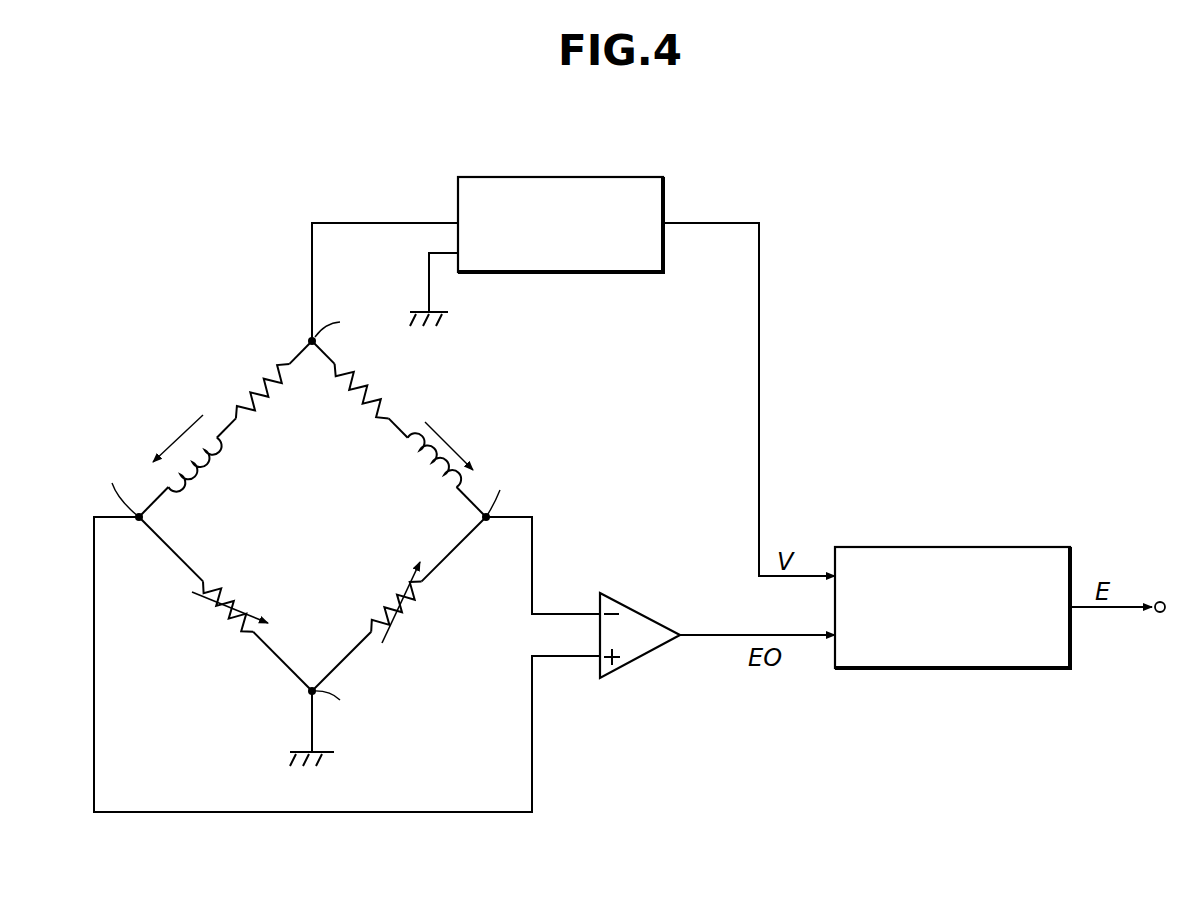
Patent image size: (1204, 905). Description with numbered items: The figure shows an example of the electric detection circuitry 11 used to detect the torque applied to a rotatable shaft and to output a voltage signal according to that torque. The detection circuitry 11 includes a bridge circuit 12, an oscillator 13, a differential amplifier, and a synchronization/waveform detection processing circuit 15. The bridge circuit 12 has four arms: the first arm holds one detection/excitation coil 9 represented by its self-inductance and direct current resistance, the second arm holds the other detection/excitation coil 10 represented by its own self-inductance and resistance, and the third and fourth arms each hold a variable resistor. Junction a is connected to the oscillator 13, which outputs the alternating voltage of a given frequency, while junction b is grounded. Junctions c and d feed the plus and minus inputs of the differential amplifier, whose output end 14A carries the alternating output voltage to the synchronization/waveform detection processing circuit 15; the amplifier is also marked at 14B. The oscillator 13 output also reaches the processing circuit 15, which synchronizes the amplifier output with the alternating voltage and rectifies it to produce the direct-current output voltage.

The detection/excitation coil 9 is at (258, 378).
The detection/excitation coil 10 is at (366, 380).
The detection circuitry 11 is at (280, 329).
The bridge circuit 12 is at (222, 420).
The oscillator 13 is at (663, 177).
The output end of the differential amplifier 14A is at (680, 628).
The differential amplifier non-inverting input side 14B is at (660, 656).
The synchronization/waveform detection processing circuit 15 is at (958, 547).